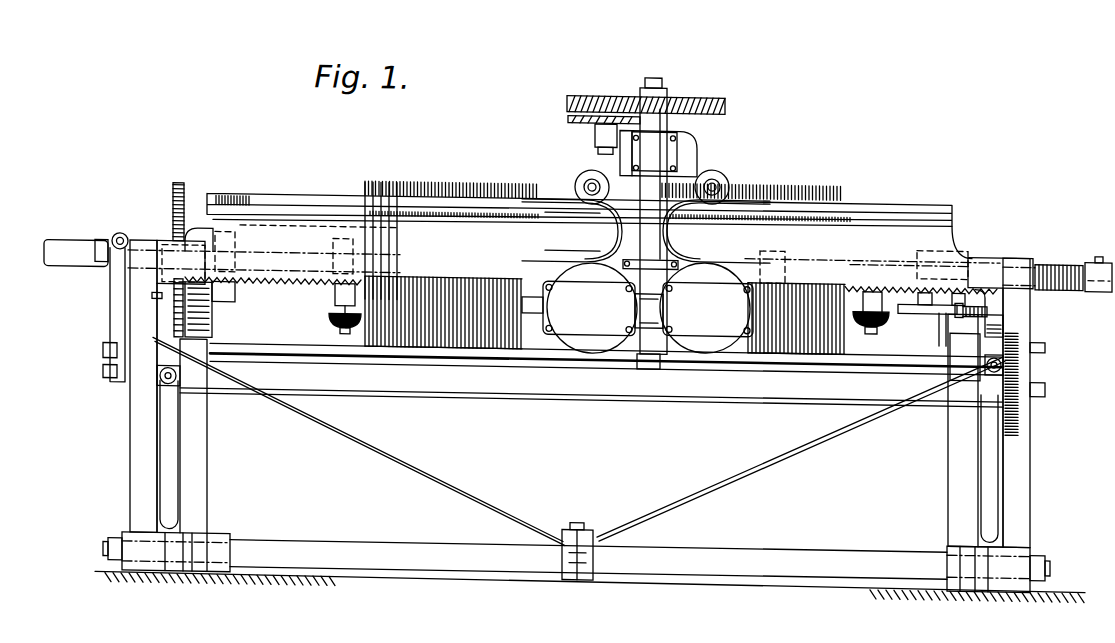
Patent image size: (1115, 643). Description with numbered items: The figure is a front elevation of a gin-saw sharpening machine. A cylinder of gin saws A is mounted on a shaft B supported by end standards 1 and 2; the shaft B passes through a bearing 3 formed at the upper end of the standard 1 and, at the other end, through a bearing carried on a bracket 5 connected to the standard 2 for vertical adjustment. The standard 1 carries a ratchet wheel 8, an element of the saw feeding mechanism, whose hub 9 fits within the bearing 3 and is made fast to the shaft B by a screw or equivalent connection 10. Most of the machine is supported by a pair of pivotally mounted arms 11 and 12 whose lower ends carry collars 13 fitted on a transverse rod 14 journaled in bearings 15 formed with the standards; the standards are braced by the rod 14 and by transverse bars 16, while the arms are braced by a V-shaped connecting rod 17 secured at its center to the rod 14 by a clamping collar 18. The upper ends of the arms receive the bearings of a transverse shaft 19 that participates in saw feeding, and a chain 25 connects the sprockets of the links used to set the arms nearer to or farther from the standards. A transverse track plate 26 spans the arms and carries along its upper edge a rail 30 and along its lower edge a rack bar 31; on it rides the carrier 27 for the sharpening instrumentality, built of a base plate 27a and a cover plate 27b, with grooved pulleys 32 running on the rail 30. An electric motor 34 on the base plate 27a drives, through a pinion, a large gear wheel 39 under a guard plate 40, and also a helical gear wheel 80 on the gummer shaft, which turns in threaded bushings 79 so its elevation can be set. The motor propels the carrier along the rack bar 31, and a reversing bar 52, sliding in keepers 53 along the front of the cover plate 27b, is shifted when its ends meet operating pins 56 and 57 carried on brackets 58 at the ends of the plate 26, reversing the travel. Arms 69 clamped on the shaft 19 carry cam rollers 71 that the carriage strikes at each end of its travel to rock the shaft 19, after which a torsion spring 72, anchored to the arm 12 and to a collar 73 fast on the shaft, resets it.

The standard 1 is at (202, 480).
The standard 2 is at (961, 430).
The bearing 3 is at (207, 229).
The bracket 5 is at (935, 294).
The ratchet wheel 8 is at (172, 198).
The hub 9 is at (212, 311).
The screw or equivalent connection 10 is at (237, 229).
The arm 11 is at (127, 490).
The arm 12 is at (1022, 477).
The collar 13 is at (143, 560).
The transverse rod 14 is at (430, 543).
The bearing 15 is at (213, 531).
The transverse bar 16 is at (748, 362).
The V-shaped connecting rod 17 is at (457, 481).
The clamping collar 18 is at (590, 527).
The transverse shaft 19 is at (110, 246).
The chain 25 is at (543, 393).
The track plate 26 is at (957, 230).
The carrier 27 is at (692, 241).
The base plate 27a is at (632, 228).
The cover plate 27b is at (632, 231).
The rail 30 is at (954, 198).
The rack bar 31 is at (283, 312).
The grooved pulleys 32 is at (586, 168).
The electric motor 34 is at (697, 152).
The gear wheel 39 is at (733, 99).
The guard plate 40 is at (716, 92).
The reversing bar 52 is at (760, 261).
The keepers or guides 53 is at (637, 308).
The operating pin 56 is at (212, 305).
The operating pin 57 is at (943, 323).
The bracket 58 is at (167, 281).
The arm 69 is at (333, 297).
The cam roller 71 is at (333, 316).
The torsion spring 72 is at (1043, 249).
The collar 73 is at (1107, 275).
The bushing 79 is at (595, 130).
The helical gear wheel 80 is at (568, 111).
The gin saws A is at (385, 172).
The shaft B is at (100, 268).